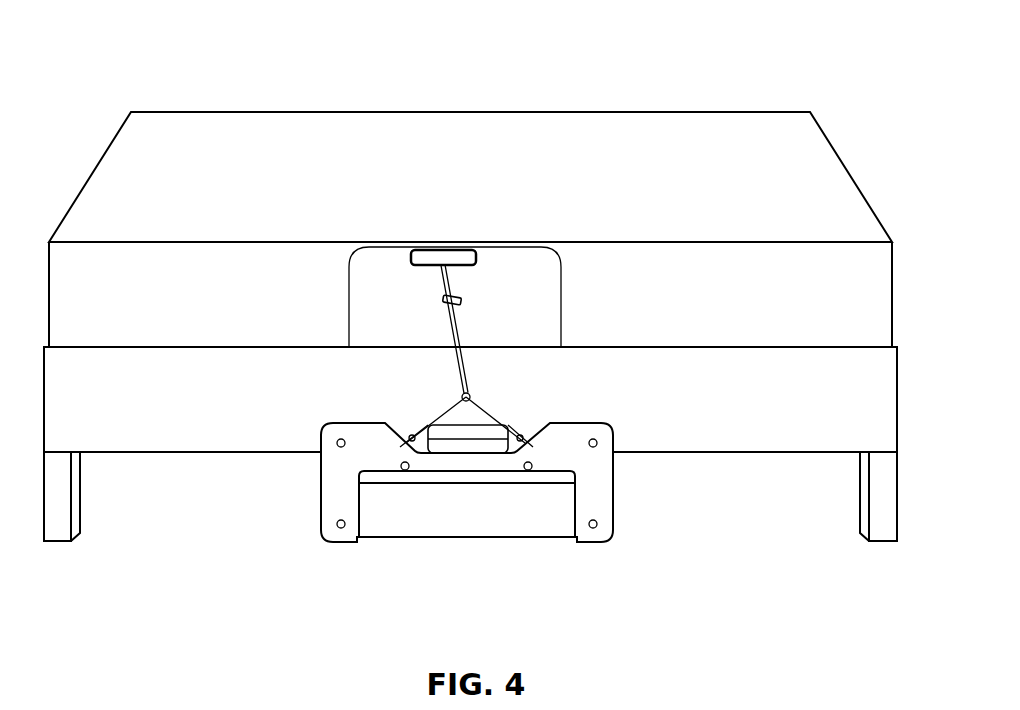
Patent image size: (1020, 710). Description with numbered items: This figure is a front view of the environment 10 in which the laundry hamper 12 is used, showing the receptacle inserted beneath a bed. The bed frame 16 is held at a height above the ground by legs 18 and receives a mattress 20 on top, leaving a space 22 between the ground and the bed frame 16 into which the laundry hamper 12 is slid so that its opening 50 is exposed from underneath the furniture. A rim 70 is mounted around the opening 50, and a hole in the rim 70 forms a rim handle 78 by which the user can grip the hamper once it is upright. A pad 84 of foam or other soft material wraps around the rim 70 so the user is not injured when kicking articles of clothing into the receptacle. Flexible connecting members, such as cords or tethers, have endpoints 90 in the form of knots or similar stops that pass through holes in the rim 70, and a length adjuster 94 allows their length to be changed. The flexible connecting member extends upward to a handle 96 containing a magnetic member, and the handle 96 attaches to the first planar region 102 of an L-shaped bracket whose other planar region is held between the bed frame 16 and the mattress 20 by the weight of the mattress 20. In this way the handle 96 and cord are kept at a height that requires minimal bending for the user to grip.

The environment 10 is at (815, 48).
The laundry hamper 12 is at (498, 500).
The bed frame 16 is at (848, 407).
The legs 18 is at (882, 494).
The mattress 20 is at (678, 283).
The space 22 is at (165, 472).
The opening 50 is at (530, 497).
The rim 70 is at (513, 448).
The rim handle 78 is at (465, 430).
The pad 84 is at (597, 498).
The endpoints 90 is at (463, 327).
The length adjuster 94 is at (443, 300).
The handle 96 is at (428, 257).
The first planar region 102 is at (502, 275).